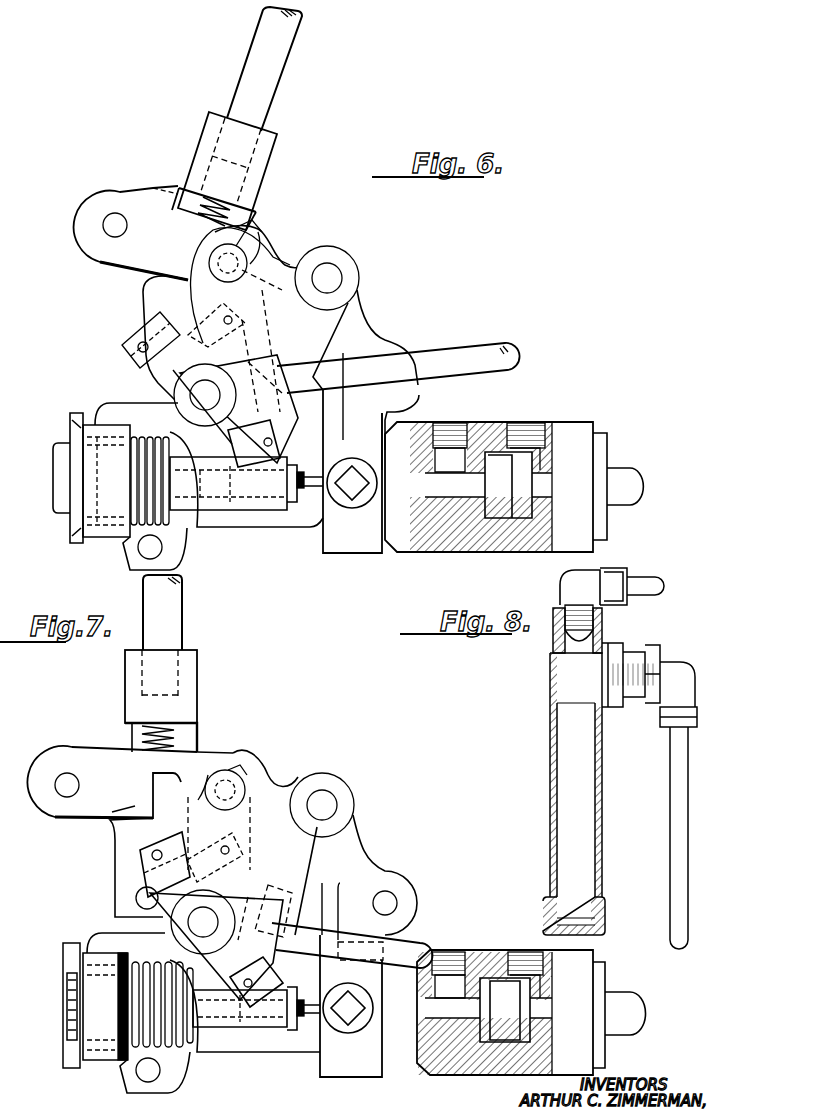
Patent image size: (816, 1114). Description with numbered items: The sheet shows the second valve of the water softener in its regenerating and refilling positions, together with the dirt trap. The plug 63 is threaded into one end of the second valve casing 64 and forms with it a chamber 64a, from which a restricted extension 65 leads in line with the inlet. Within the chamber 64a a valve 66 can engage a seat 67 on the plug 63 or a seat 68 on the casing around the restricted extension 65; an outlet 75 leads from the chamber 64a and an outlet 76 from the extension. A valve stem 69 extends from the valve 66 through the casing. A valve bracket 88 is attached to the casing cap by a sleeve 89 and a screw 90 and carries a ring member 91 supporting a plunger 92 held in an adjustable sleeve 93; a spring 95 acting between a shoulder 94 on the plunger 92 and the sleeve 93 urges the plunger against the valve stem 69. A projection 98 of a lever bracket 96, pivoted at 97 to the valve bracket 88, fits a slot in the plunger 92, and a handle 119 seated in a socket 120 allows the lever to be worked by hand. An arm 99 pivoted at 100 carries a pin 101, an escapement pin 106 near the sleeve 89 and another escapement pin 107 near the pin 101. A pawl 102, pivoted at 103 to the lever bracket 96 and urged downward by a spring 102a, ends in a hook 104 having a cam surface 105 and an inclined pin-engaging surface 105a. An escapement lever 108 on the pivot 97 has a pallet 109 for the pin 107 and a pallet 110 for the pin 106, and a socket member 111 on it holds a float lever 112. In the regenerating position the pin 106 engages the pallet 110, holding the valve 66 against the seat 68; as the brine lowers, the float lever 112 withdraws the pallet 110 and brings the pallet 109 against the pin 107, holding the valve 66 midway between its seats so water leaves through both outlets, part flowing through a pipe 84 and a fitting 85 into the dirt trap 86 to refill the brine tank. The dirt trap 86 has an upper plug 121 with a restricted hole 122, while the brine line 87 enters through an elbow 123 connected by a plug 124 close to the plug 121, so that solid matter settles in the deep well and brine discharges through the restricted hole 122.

In FIG. 6, the plug 63 is at (600, 462).
In FIG. 7, the plug 63 is at (604, 988).
In FIG. 6, the second valve casing 64 is at (570, 436).
In FIG. 7, the second valve casing 64 is at (590, 962).
In FIG. 6, the chamber 64a is at (518, 540).
In FIG. 7, the chamber 64a is at (520, 1045).
In FIG. 6, the restricted extension 65 is at (460, 510).
In FIG. 7, the restricted extension 65 is at (452, 1030).
In FIG. 6, the valve 66 is at (500, 518).
In FIG. 7, the valve 66 is at (500, 1030).
In FIG. 6, the seat 67 is at (552, 452).
In FIG. 7, the seat 67 is at (545, 988).
In FIG. 6, the seat 68 is at (485, 430).
In FIG. 7, the seat 68 is at (464, 998).
In FIG. 6, the valve stem 69 is at (436, 488).
In FIG. 7, the valve stem 69 is at (430, 1008).
In FIG. 6, the outlet 75 is at (528, 428).
In FIG. 7, the outlet 75 is at (524, 956).
In FIG. 6, the outlet 76 is at (452, 418).
In FIG. 7, the outlet 76 is at (448, 955).
In FIG. 8, the pipe 84 is at (650, 588).
In FIG. 8, the fitting 85 is at (566, 590).
In FIG. 8, the dirt trap 86 is at (550, 820).
In FIG. 8, the brine line 87 is at (682, 834).
In FIG. 6, the valve bracket 88 is at (373, 342).
In FIG. 7, the valve bracket 88 is at (373, 872).
In FIG. 6, the sleeve 89 is at (352, 553).
In FIG. 7, the sleeve 89 is at (352, 1077).
In FIG. 6, the screw 90 is at (350, 500).
In FIG. 7, the screw 90 is at (348, 1025).
In FIG. 6, the ring member 91 is at (108, 538).
In FIG. 7, the ring member 91 is at (106, 1062).
In FIG. 6, the plunger 92 is at (268, 512).
In FIG. 7, the plunger 92 is at (270, 1030).
In FIG. 6, the sleeve 93 is at (80, 528).
In FIG. 7, the sleeve 93 is at (70, 1055).
In FIG. 6, the shoulder 94 is at (172, 520).
In FIG. 7, the shoulder 94 is at (175, 1048).
In FIG. 6, the spring 95 is at (133, 560).
In FIG. 7, the spring 95 is at (168, 1072).
In FIG. 6, the lever bracket 96 is at (143, 308).
In FIG. 7, the lever bracket 96 is at (115, 879).
In FIG. 6, the pivot 97 is at (190, 395).
In FIG. 7, the pivot 97 is at (208, 915).
In FIG. 6, the projection 98 is at (203, 527).
In FIG. 7, the projection 98 is at (215, 1053).
In FIG. 6, the arm 99 is at (280, 262).
In FIG. 7, the arm 99 is at (278, 785).
In FIG. 6, the pivot 100 is at (333, 280).
In FIG. 7, the pivot 100 is at (327, 803).
In FIG. 6, the pin 101 is at (210, 283).
In FIG. 7, the pin 101 is at (238, 770).
In FIG. 6, the pawl 102 is at (142, 262).
In FIG. 7, the pawl 102 is at (68, 800).
In FIG. 6, the spring 102a is at (190, 190).
In FIG. 7, the spring 102a is at (135, 737).
In FIG. 6, the pivot 103 is at (102, 224).
In FIG. 7, the pivot 103 is at (55, 786).
In FIG. 6, the hook 104 is at (245, 248).
In FIG. 7, the hook 104 is at (206, 770).
In FIG. 6, the cam surface 105 is at (283, 240).
In FIG. 7, the cam surface 105 is at (236, 765).
In FIG. 6, the inclined cam surface 105a is at (212, 259).
In FIG. 7, the inclined cam surface 105a is at (210, 778).
In FIG. 6, the escapement pin 106 is at (282, 384).
In FIG. 7, the escapement pin 106 is at (276, 955).
In FIG. 6, the escapement pin 107 is at (245, 325).
In FIG. 7, the escapement pin 107 is at (215, 850).
In FIG. 6, the escapement lever 108 is at (232, 444).
In FIG. 7, the escapement lever 108 is at (163, 880).
In FIG. 6, the pallet 109 is at (124, 328).
In FIG. 7, the pallet 109 is at (160, 820).
In FIG. 6, the pallet 110 is at (283, 447).
In FIG. 7, the pallet 110 is at (284, 980).
In FIG. 6, the socket member 111 is at (281, 360).
In FIG. 7, the socket member 111 is at (258, 900).
In FIG. 6, the float lever 112 is at (450, 366).
In FIG. 7, the float lever 112 is at (415, 940).
In FIG. 6, the handle 119 is at (275, 57).
In FIG. 7, the handle 119 is at (155, 613).
In FIG. 6, the socket 120 is at (214, 116).
In FIG. 7, the socket 120 is at (130, 675).
In FIG. 8, the plug 121 is at (600, 618).
In FIG. 8, the restricted hole 122 is at (556, 648).
In FIG. 8, the elbow 123 is at (685, 682).
In FIG. 8, the plug 124 is at (652, 657).